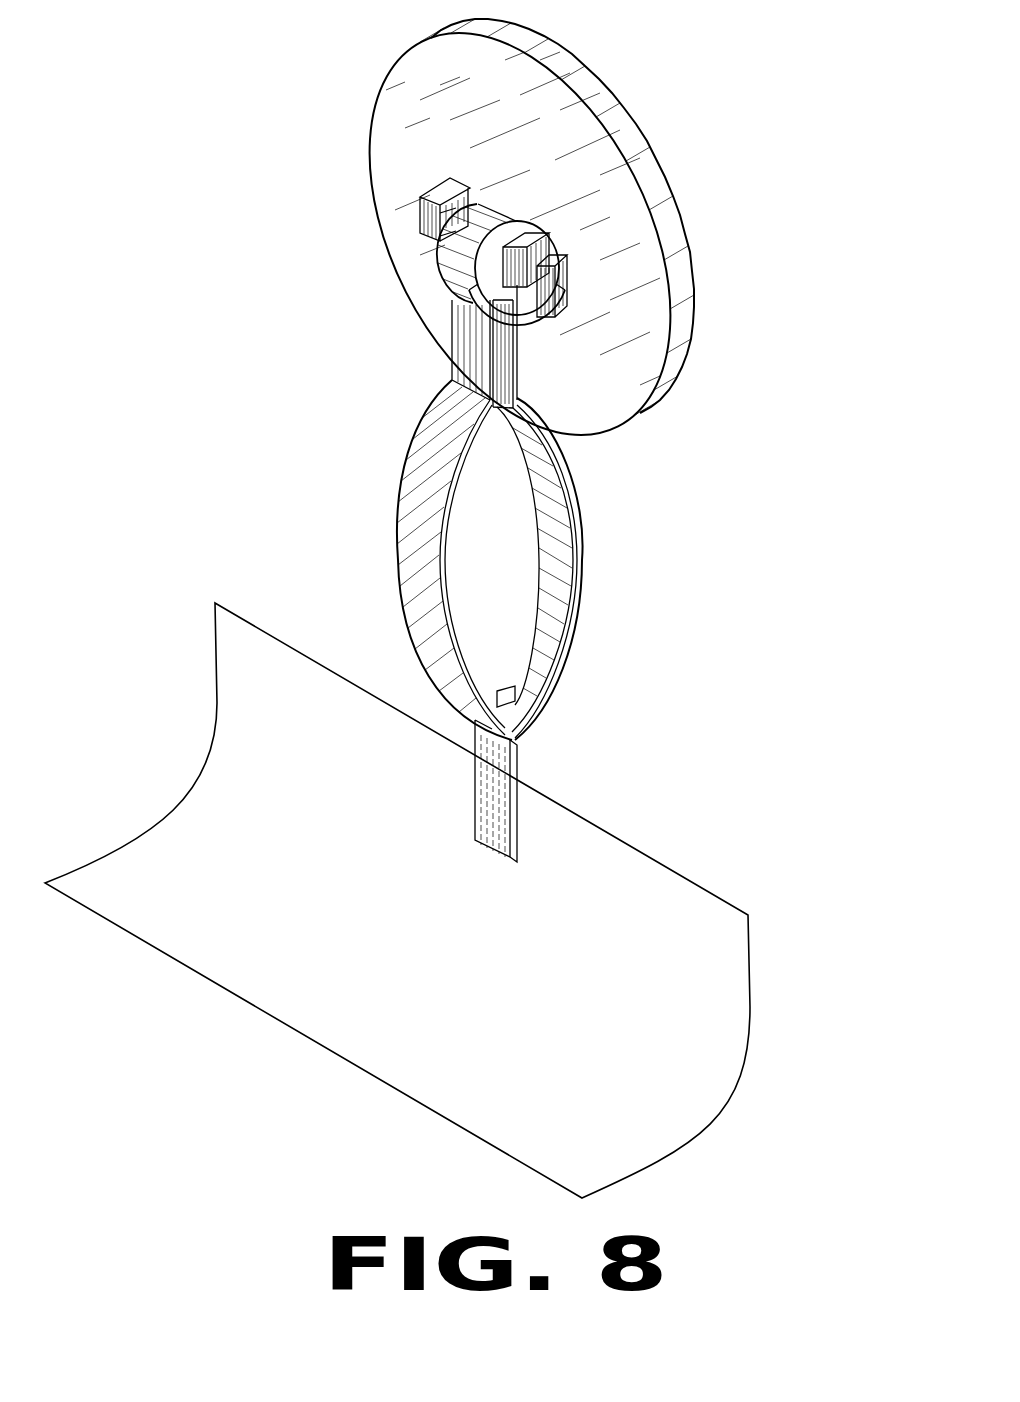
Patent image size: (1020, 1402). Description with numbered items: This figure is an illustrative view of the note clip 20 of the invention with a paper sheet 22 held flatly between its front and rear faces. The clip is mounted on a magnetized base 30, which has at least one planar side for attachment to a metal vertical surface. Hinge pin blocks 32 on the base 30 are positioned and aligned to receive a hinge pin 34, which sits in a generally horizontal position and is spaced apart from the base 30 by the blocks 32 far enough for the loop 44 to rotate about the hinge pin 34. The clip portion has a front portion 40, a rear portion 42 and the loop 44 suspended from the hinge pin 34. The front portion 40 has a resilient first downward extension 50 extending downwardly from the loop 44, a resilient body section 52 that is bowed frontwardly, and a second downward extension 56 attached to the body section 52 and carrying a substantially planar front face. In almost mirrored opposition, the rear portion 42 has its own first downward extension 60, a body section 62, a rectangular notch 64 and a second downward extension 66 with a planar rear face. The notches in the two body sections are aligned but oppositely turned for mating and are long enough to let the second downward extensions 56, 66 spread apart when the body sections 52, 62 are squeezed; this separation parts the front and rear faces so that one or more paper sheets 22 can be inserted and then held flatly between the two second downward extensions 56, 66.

The note clip 20 is at (598, 431).
The paper sheets 22 is at (240, 707).
The magnetized base 30 is at (620, 112).
The hinge pin blocks 32 is at (447, 187).
The hinge pin 34 is at (520, 232).
The front portion 40 is at (525, 573).
The rear portion 42 is at (532, 512).
The loop 44 is at (445, 262).
The first downward extension 50 is at (462, 350).
The body section 52 is at (402, 570).
The second downward extension 56 is at (520, 768).
The first downward extension 60 is at (545, 410).
The body section 62 is at (585, 575).
The rectangular notch 64 is at (555, 688).
The second downward extension 66 is at (470, 778).